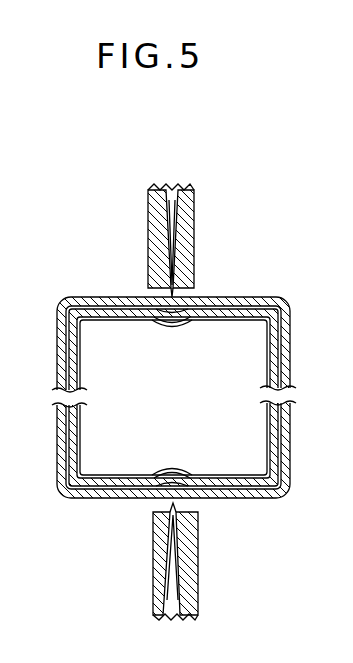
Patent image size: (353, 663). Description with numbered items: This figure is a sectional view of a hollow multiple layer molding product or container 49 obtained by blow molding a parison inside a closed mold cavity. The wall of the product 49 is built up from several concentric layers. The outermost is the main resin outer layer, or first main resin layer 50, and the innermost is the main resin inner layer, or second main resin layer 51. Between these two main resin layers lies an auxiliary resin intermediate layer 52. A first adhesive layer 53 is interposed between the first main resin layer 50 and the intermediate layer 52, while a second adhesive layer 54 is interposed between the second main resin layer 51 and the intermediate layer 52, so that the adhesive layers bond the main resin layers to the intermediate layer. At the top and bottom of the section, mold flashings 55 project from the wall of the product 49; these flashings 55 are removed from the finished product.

The multiple layer molding product 49 is at (278, 294).
The first main resin layer 50 is at (60, 299).
The second main resin layer 51 is at (84, 330).
The auxiliary resin intermediate layer 52 is at (60, 372).
The first adhesive layer 53 is at (56, 340).
The second adhesive layer 54 is at (78, 373).
The mold flashings 55 is at (200, 242).